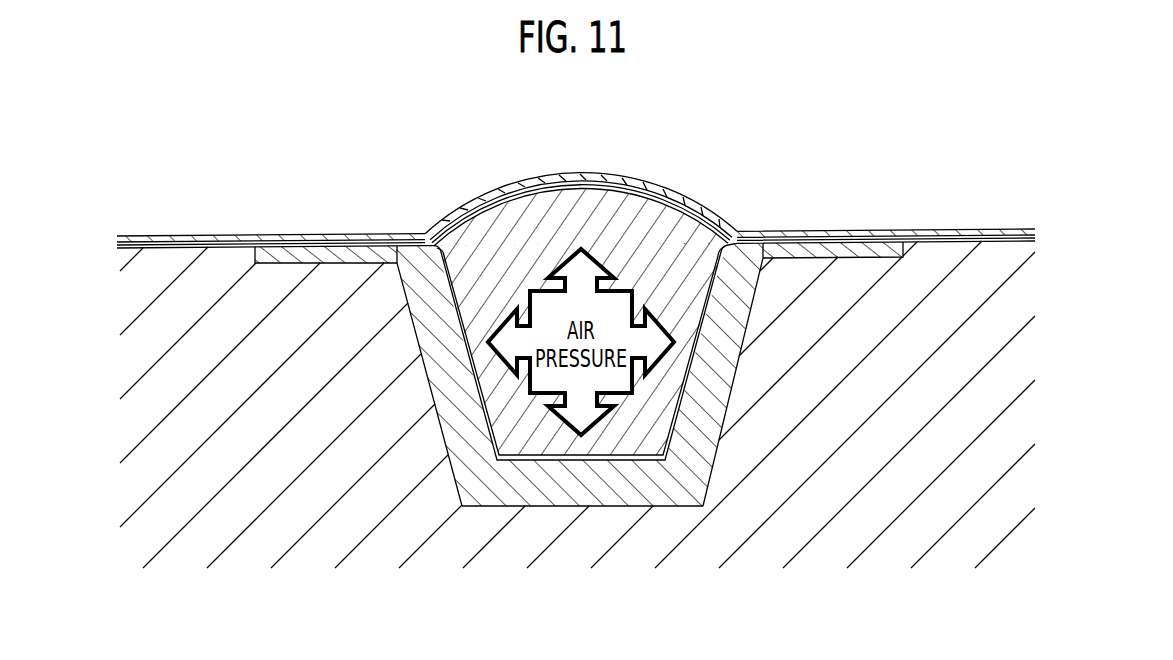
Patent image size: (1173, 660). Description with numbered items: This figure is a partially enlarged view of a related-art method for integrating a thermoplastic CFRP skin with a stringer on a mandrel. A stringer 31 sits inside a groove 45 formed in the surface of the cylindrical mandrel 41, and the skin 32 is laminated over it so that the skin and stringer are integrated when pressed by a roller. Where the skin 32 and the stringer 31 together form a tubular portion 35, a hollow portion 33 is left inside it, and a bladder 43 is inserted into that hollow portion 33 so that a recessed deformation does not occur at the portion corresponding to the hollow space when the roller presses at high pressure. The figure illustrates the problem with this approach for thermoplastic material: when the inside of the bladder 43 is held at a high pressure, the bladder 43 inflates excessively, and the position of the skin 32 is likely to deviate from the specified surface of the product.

The stringer 31 is at (437, 430).
The skin 32 is at (212, 235).
The hollow portion 33 is at (702, 330).
The tubular portion 35 is at (497, 196).
The mandrel 41 is at (935, 268).
The bladder 43 is at (645, 192).
The groove 45 is at (598, 507).